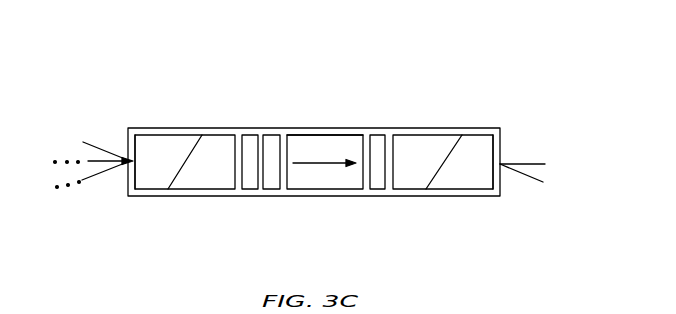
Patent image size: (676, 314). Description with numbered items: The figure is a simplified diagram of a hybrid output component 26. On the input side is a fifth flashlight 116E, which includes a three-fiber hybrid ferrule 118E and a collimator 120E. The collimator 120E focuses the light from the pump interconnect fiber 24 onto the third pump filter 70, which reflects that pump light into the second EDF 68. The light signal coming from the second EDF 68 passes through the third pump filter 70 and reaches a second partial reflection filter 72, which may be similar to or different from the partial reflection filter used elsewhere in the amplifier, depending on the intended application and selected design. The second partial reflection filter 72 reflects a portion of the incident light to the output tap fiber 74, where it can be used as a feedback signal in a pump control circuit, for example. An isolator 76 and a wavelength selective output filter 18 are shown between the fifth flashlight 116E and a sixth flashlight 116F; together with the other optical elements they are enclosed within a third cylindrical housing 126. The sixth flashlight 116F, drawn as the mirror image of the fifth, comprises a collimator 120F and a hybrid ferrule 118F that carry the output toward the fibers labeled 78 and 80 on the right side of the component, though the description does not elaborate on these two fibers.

The hybrid output component 26 is at (383, 77).
The fifth flashlight 116E is at (168, 122).
The three-fiber hybrid ferrule 118E is at (150, 189).
The collimator 120E is at (200, 189).
The third pump filter 70 is at (250, 130).
The second partial reflection filter 72 is at (272, 130).
The isolator 76 is at (327, 189).
The third cylindrical housing 126 is at (328, 127).
The wavelength selective output filter 18 is at (380, 130).
The sixth flashlight 116F is at (470, 123).
The collimator 120F is at (408, 189).
The hybrid ferrule 118F is at (460, 189).
The output tap fiber 74 is at (97, 143).
The second EDF 68 is at (88, 160).
The pump interconnect fiber 24 is at (97, 180).
The output optical fiber 78 is at (533, 162).
The output optical fiber 80 is at (534, 184).